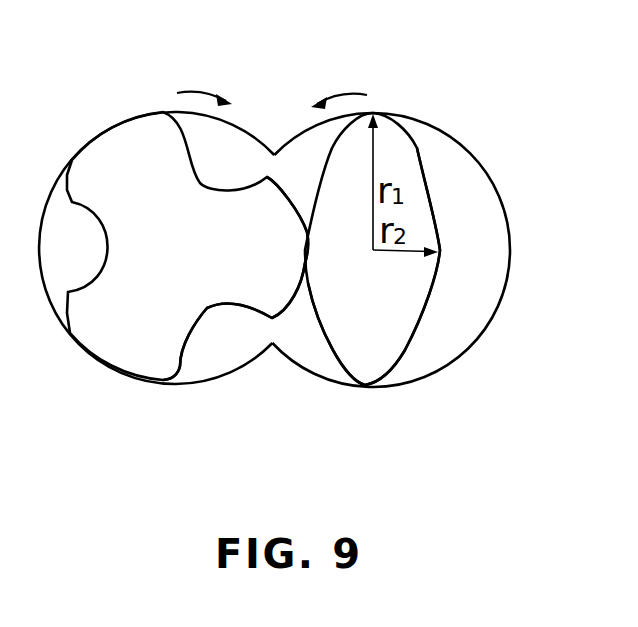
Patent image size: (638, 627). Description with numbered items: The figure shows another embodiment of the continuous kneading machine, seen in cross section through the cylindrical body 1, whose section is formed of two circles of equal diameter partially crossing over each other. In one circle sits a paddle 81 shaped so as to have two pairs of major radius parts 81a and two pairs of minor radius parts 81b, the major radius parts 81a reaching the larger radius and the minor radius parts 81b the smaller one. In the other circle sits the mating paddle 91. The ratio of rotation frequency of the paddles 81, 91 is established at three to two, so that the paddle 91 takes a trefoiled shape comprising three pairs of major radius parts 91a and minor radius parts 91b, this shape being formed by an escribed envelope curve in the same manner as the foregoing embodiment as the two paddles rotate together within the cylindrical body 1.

The cylindrical body 1 is at (233, 123).
The paddle 91 is at (118, 133).
The major radius parts 91a is at (297, 260).
The minor radius parts 91b is at (203, 298).
The paddle 81 is at (407, 157).
The major radius parts 81a is at (377, 370).
The minor radius parts 81b is at (432, 260).